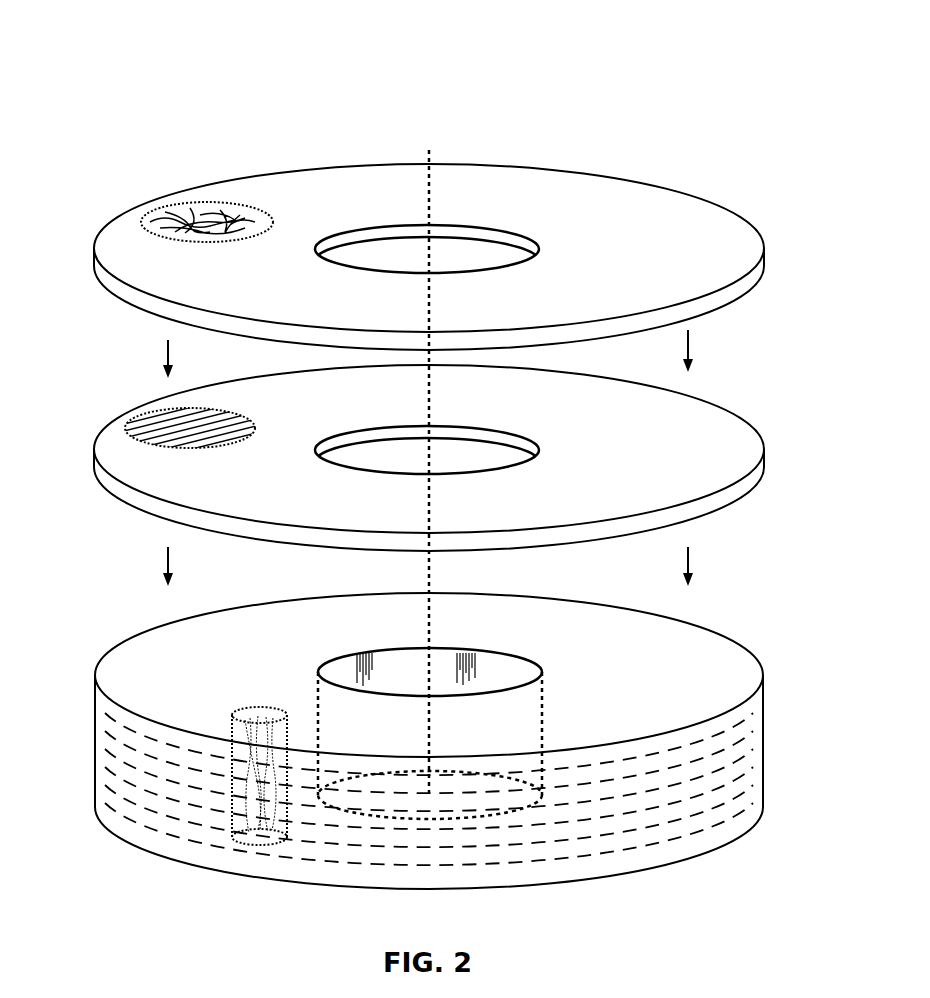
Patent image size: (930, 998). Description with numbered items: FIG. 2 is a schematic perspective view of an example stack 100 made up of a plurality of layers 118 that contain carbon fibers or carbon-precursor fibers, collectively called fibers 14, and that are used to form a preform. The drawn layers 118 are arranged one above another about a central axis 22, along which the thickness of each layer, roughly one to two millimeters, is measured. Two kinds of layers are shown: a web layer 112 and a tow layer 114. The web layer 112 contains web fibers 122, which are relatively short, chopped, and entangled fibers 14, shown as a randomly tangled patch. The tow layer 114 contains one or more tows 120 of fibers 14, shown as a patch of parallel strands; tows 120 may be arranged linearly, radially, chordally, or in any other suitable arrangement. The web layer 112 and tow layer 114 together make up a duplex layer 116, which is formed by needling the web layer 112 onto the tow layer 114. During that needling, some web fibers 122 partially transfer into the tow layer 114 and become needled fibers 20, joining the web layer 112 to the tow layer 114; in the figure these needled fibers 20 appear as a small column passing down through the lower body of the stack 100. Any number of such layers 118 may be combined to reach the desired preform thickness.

The stack 100 is at (128, 52).
The fibers 14 is at (201, 192).
The web fibers 122 is at (223, 232).
The web layer 112 is at (643, 268).
The tow layer 114 is at (647, 471).
The tows 120 is at (223, 432).
The duplex layer 116 is at (752, 217).
The plurality of layers 118 is at (90, 234).
The central axis 22 is at (428, 746).
The needled fibers 20 is at (247, 823).